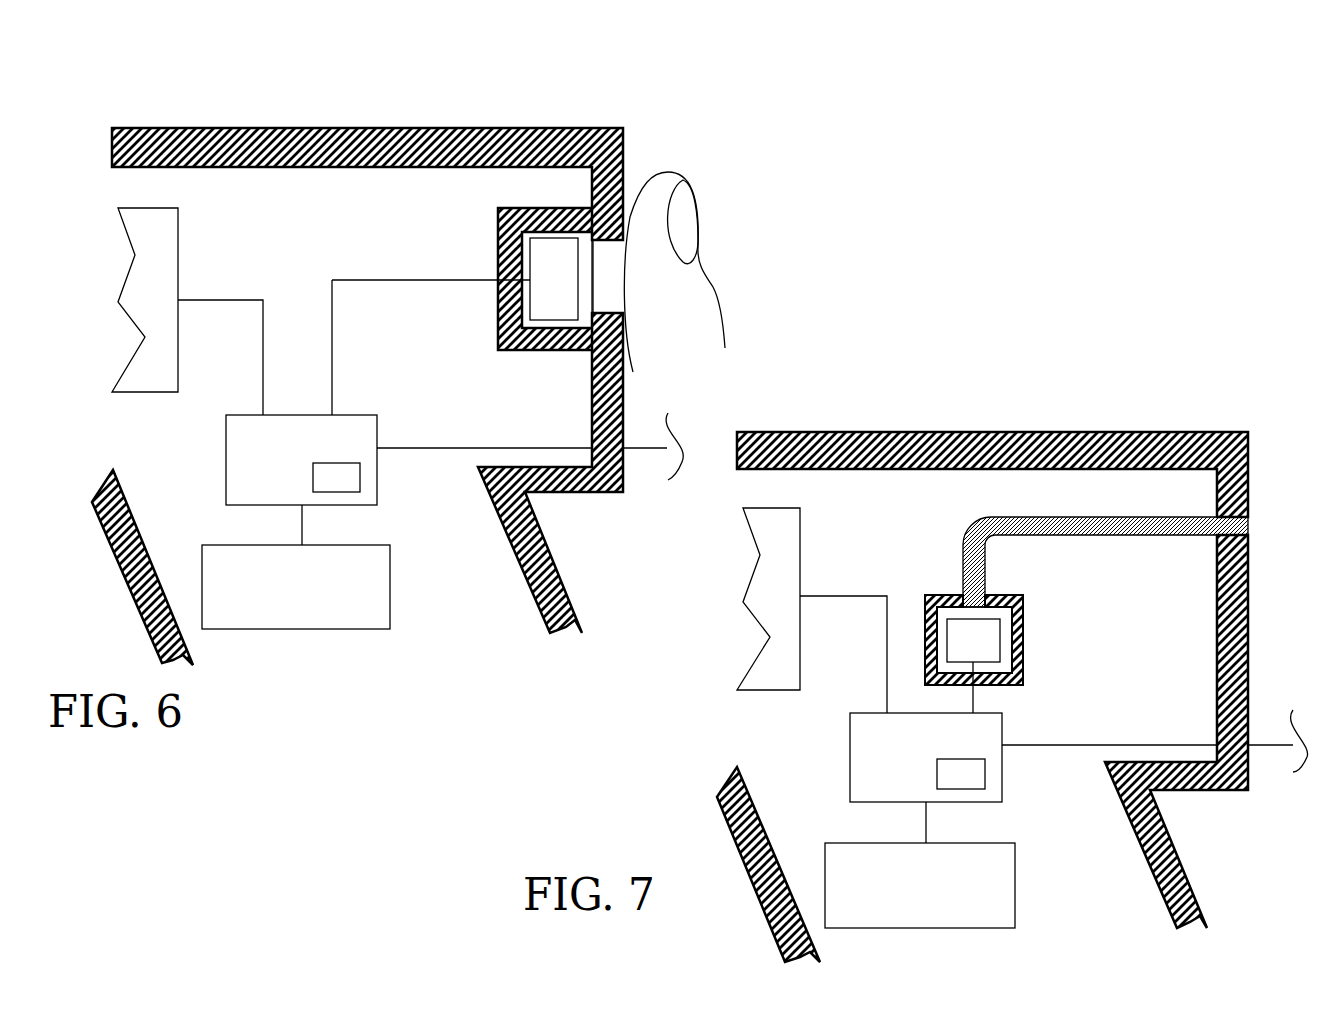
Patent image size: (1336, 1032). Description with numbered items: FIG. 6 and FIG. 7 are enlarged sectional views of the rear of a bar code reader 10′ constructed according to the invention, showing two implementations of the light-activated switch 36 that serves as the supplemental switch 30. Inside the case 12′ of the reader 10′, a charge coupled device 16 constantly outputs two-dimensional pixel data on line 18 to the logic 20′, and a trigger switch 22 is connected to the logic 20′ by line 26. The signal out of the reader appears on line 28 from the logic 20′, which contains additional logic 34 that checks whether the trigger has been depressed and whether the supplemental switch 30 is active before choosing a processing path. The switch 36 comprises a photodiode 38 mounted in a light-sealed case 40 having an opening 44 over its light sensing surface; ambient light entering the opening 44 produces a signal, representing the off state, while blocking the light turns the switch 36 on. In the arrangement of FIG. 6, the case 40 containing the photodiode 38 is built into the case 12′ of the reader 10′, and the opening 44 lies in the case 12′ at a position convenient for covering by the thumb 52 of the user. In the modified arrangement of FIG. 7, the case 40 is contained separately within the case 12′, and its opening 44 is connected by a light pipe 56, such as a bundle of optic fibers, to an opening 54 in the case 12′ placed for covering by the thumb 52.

In FIG. 6, the reader 10′ is at (463, 380).
In FIG. 7, the reader 10′ is at (992, 627).
In FIG. 6, the case 12′ is at (367, 380).
In FIG. 7, the case 12′ is at (992, 680).
In FIG. 6, the charge coupled device (CCD) 16 is at (180, 230).
In FIG. 7, the charge coupled device (CCD) 16 is at (800, 528).
In FIG. 6, the output line 18 is at (218, 300).
In FIG. 7, the output line 18 is at (842, 596).
In FIG. 6, the logic 20′ is at (409, 445).
In FIG. 7, the logic 20′ is at (1033, 744).
In FIG. 6, the trigger switch 22 is at (390, 602).
In FIG. 7, the trigger switch 22 is at (1015, 900).
In FIG. 6, the line 26 is at (300, 527).
In FIG. 7, the line 26 is at (923, 825).
In FIG. 6, the line 28 is at (640, 450).
In FIG. 7, the line 28 is at (1262, 745).
In FIG. 6, the supplemental switch 30 is at (555, 358).
In FIG. 7, the supplemental switch 30 is at (1043, 663).
In FIG. 6, the logic 34 is at (345, 476).
In FIG. 7, the logic 34 is at (968, 772).
In FIG. 6, the light-activated switch 36 is at (484, 216).
In FIG. 7, the light-activated switch 36 is at (1042, 646).
In FIG. 6, the photodiode 38 is at (548, 305).
In FIG. 7, the photodiode 38 is at (993, 630).
In FIG. 6, the case 40 is at (497, 255).
In FIG. 7, the case 40 is at (926, 612).
In FIG. 6, the opening 44 is at (607, 278).
In FIG. 7, the opening 44 is at (983, 590).
In FIG. 6, the thumb 52 is at (710, 312).
In FIG. 7, the opening 54 is at (1252, 523).
In FIG. 7, the light pipe 56 is at (1138, 537).